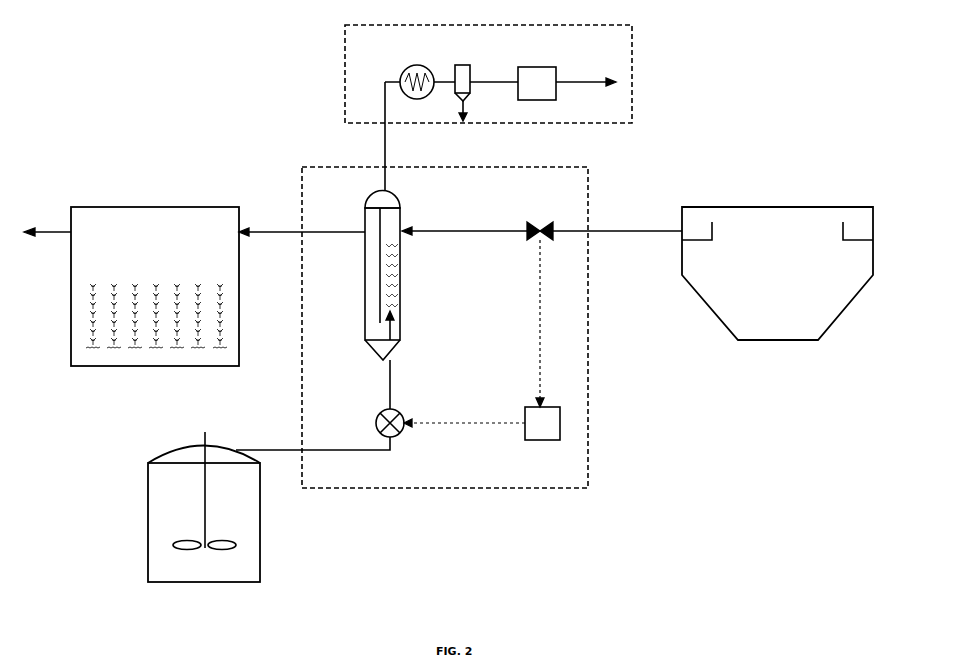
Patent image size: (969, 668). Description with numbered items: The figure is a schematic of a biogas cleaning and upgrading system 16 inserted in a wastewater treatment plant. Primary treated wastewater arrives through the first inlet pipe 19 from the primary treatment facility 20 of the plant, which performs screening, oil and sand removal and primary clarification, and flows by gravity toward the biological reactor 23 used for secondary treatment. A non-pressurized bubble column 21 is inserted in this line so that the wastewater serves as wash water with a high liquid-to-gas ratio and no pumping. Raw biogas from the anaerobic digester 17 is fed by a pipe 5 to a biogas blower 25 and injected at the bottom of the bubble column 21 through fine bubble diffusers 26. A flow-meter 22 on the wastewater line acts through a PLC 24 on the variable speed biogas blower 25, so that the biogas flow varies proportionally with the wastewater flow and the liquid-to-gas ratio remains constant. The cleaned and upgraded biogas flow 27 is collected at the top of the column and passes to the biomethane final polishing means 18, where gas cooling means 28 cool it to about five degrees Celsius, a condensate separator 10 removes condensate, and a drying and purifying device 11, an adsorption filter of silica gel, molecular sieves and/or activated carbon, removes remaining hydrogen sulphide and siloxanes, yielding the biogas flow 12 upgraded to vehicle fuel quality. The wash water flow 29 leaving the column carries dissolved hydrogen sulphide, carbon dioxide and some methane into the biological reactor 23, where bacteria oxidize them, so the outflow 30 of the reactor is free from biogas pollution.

The feed line from nutrient tank 5 is at (313, 438).
The condensate separator 10 is at (461, 81).
The drying and purifying device 11 is at (537, 70).
The biogas upgraded to vehicle fuel quality flow 12 is at (586, 74).
The biogas cleaning and upgrading system 16 is at (596, 303).
The anaerobic digester 17 is at (268, 525).
The biomethane final polishing means 18 is at (633, 72).
The first inlet pipe 19 is at (542, 223).
The primary treatment facility 20 is at (777, 262).
The non-pressurized bubble column 21 is at (407, 257).
The flow-meter 22 is at (540, 304).
The biological reactor 23 is at (155, 286).
The PLC 24 is at (494, 423).
The biogas blower 25 is at (377, 398).
The fine bubble diffusers 26 is at (402, 313).
The cleaned and upgraded biogas flow 27 is at (394, 136).
The gas cooling means 28 is at (427, 40).
The wash water flow 29 is at (302, 223).
The outflow of the biological reactor 30 is at (47, 219).